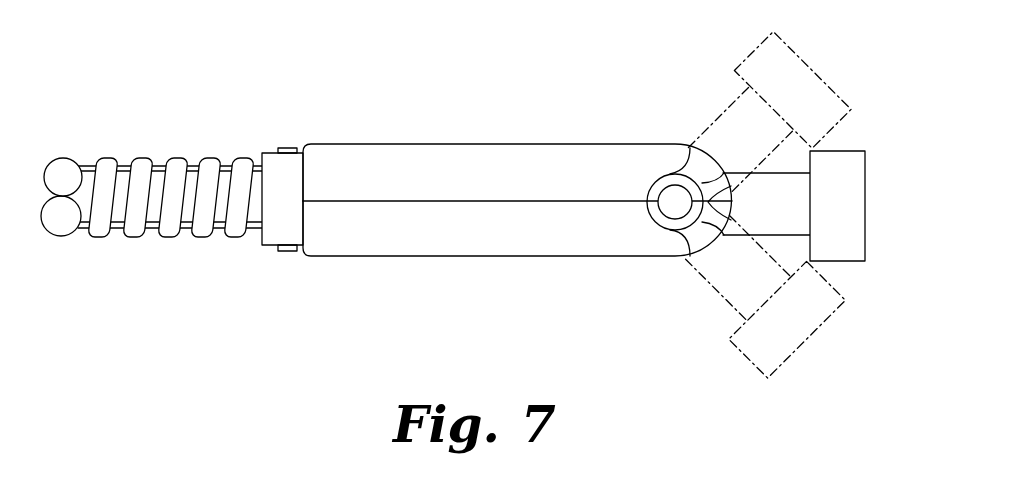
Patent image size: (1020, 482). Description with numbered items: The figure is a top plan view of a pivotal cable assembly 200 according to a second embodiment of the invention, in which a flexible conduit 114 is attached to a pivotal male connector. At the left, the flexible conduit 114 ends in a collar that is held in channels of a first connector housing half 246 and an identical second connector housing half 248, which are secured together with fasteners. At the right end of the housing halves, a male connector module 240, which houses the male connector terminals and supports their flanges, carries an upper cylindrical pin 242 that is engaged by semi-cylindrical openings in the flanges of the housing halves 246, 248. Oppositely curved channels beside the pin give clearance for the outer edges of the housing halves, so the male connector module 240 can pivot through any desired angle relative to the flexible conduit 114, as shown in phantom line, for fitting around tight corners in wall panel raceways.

The tool assembly 200 is at (492, 103).
The flexible conduit 114 is at (205, 170).
The first connector housing half 246 is at (423, 155).
The second connector housing half 248 is at (453, 252).
The upper cylindrical pin 242 is at (672, 195).
The male connector module 240 is at (792, 203).